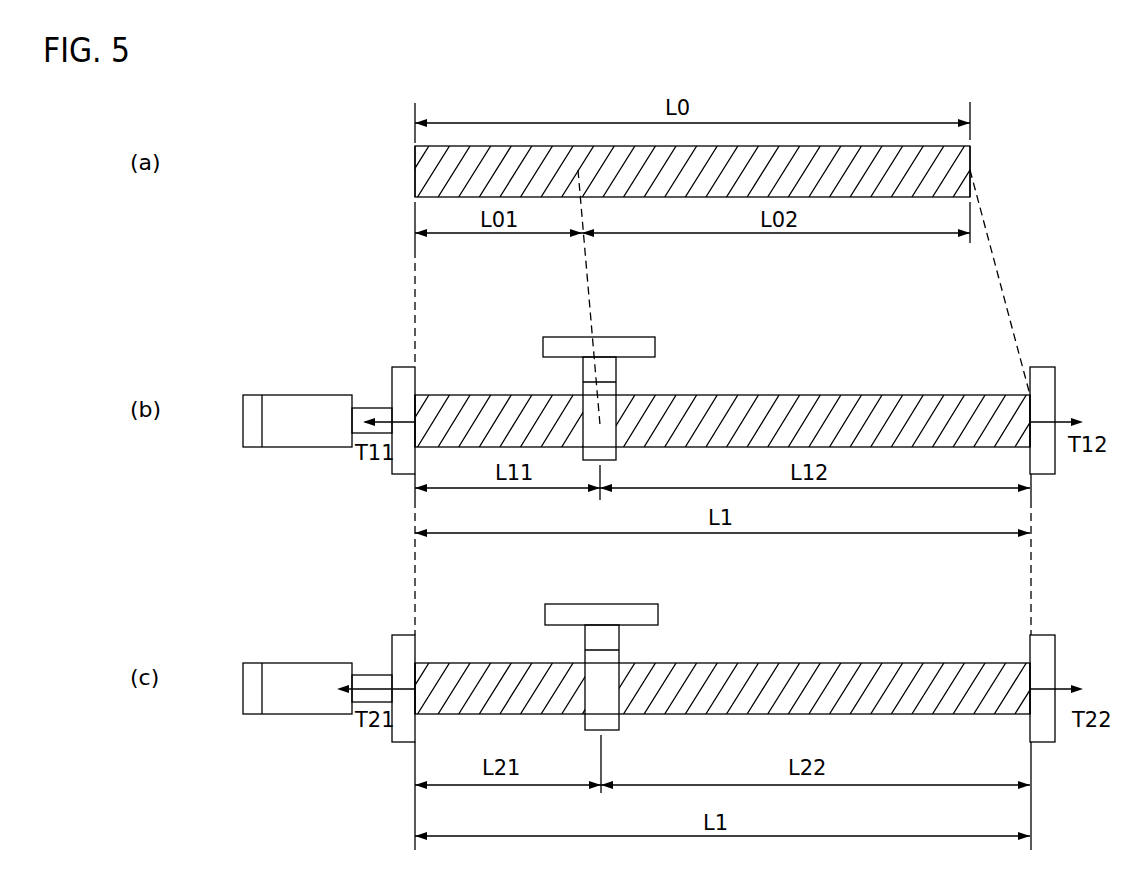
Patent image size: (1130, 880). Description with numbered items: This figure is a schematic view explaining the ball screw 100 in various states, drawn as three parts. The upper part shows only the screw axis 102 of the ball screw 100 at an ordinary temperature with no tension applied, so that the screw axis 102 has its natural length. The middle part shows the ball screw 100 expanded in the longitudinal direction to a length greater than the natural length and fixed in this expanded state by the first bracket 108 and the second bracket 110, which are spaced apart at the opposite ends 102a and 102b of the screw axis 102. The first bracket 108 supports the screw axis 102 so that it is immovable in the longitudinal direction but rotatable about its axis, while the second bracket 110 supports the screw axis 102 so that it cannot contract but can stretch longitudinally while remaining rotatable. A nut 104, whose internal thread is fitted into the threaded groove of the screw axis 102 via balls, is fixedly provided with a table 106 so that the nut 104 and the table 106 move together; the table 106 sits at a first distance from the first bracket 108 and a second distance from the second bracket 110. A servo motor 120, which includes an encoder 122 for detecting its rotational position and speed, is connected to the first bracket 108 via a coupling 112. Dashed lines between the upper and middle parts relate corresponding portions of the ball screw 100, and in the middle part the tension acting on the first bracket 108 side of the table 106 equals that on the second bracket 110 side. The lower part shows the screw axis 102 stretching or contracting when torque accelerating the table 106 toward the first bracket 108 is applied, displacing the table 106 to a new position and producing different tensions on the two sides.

The ball screw 100 is at (393, 168).
The screw axis 102 is at (880, 146).
The end of the screw axis 102a is at (442, 112).
The end of the screw axis 102b is at (947, 112).
The nut 104 is at (617, 388).
The table 106 is at (632, 337).
The first bracket 108 is at (400, 367).
The second bracket 110 is at (1045, 367).
The coupling 112 is at (365, 408).
The servo motor 120 is at (309, 395).
The encoder 122 is at (252, 395).